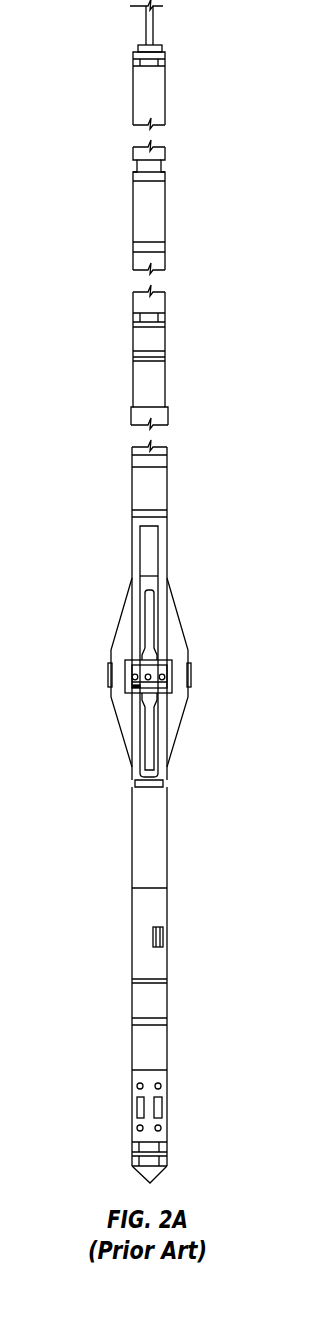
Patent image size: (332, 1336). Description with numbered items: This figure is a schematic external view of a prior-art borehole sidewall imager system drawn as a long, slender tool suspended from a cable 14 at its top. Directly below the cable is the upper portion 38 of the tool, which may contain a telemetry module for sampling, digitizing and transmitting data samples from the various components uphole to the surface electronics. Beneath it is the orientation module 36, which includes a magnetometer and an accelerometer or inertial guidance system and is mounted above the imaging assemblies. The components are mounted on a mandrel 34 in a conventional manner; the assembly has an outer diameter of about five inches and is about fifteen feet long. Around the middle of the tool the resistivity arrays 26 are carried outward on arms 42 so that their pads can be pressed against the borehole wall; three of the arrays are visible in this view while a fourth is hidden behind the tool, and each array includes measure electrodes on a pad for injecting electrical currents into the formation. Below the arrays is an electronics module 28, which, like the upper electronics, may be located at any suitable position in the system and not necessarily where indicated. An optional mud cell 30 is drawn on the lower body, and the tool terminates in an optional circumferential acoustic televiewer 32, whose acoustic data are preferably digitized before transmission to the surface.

The wireline cable 14 is at (153, 36).
The upper portion 38 is at (165, 83).
The orientation module 36 is at (165, 220).
The mandrel 34 is at (167, 492).
The bow spring arms 42 is at (120, 617).
The resistivity arrays 26 is at (107, 668).
The electronics module 28 is at (167, 837).
The mud cell 30 is at (165, 935).
The circumferential acoustic televiewer 32 is at (167, 1105).